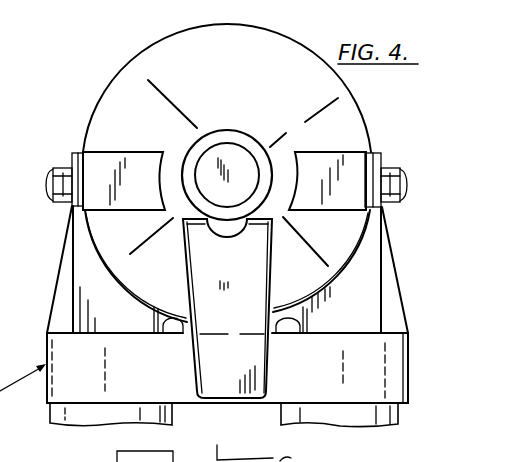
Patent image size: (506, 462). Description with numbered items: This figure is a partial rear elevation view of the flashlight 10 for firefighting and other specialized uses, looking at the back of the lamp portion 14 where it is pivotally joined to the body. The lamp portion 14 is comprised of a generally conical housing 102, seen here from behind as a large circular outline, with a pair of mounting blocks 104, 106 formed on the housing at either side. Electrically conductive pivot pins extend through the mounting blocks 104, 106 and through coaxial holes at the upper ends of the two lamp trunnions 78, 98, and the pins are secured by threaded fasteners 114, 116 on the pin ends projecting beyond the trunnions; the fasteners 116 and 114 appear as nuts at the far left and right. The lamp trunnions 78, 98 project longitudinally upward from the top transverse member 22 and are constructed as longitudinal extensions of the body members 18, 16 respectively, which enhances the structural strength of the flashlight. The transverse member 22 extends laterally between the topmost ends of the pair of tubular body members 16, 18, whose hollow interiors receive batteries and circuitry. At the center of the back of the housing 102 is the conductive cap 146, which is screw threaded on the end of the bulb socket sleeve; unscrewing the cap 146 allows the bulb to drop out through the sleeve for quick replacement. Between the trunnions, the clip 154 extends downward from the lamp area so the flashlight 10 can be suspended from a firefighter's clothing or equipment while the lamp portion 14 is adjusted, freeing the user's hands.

The flashlight 10 is at (107, 68).
The lamp portion 14 is at (152, 40).
The conical housing 102 is at (275, 57).
The conductive cap 146 is at (224, 148).
The mounting block 106 is at (97, 157).
The mounting block 104 is at (348, 156).
The threaded fastener 116 is at (52, 199).
The threaded fastener 114 is at (404, 172).
The lamp trunnion 78 is at (79, 251).
The second lamp trunnion 98 is at (370, 263).
The clip 154 is at (217, 318).
The top transverse member 22 is at (62, 388).
The body member 18 is at (77, 421).
The body member 16 is at (354, 428).